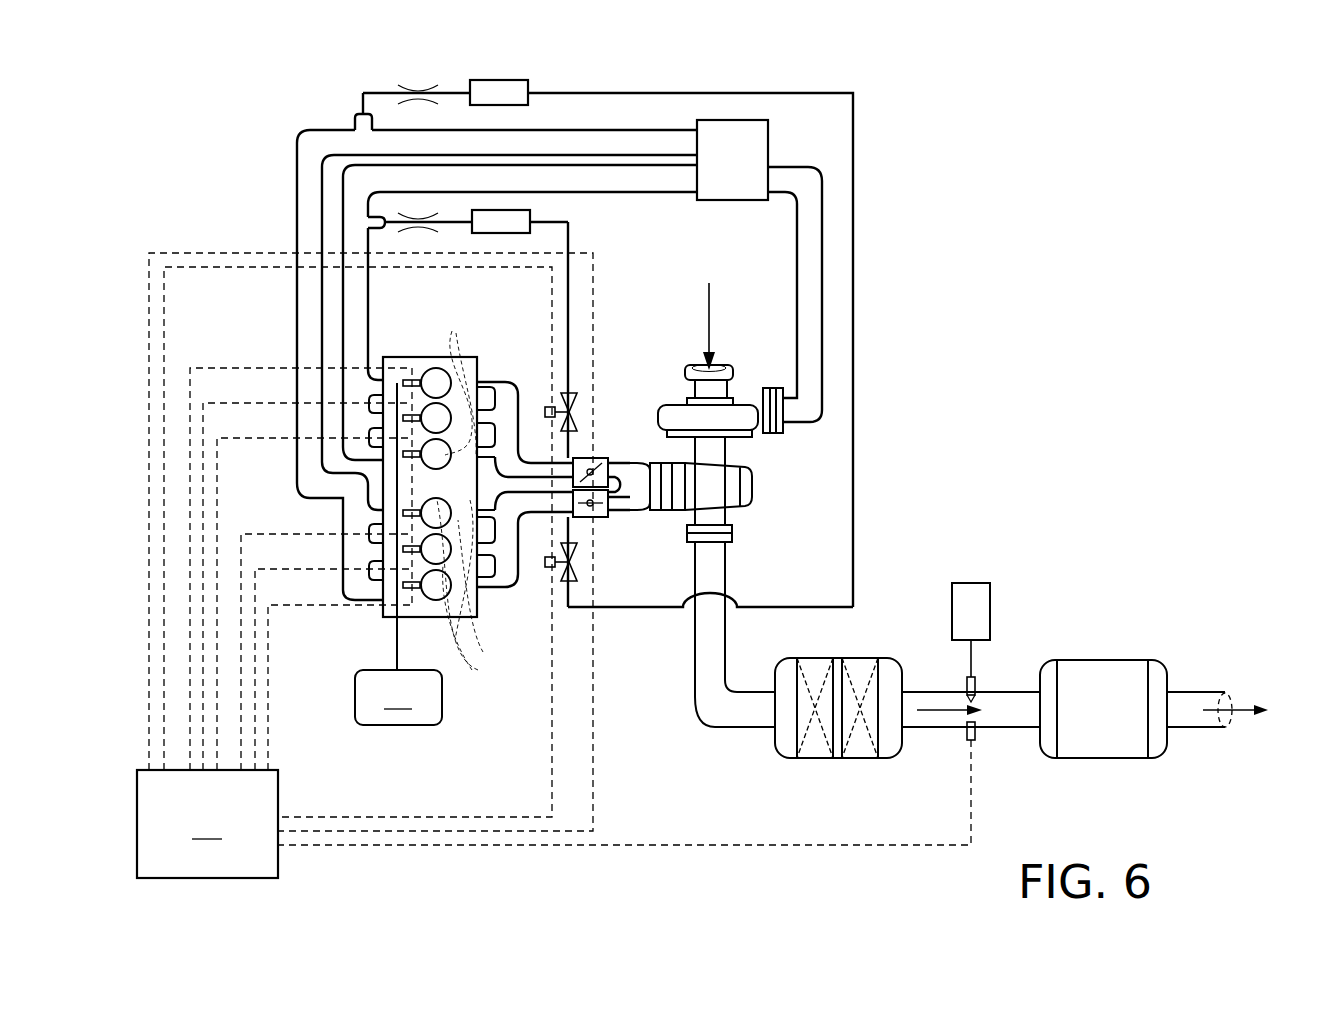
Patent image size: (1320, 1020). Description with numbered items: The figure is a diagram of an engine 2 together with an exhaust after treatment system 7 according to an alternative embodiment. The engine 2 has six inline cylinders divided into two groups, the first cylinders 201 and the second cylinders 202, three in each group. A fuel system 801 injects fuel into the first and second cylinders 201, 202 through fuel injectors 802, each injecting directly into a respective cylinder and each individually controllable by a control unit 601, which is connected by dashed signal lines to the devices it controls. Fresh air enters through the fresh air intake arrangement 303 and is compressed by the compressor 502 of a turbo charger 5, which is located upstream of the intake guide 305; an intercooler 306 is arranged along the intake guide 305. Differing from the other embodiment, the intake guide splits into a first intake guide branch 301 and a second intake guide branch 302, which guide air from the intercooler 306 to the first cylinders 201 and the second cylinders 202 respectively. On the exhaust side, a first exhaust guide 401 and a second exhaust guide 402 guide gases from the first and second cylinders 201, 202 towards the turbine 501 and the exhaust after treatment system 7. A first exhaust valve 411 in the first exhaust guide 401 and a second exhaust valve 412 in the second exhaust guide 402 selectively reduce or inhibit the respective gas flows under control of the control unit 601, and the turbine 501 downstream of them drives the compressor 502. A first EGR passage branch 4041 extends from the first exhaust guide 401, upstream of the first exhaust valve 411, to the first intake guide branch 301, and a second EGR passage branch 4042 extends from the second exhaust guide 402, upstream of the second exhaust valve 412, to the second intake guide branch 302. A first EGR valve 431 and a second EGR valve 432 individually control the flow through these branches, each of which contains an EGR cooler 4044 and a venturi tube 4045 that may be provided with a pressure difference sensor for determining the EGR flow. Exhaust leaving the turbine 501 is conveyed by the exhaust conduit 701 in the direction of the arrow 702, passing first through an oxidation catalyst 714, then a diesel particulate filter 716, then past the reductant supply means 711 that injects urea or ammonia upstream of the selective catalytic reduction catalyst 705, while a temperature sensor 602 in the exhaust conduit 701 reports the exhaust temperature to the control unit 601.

The engine 2 is at (628, 746).
The turbo charger 5 is at (752, 498).
The exhaust after treatment system 7 is at (1095, 528).
The first cylinders 201 is at (450, 332).
The second cylinders 202 is at (478, 668).
The first intake guide branch 301 is at (613, 192).
The second intake guide branch 302 is at (296, 205).
The fresh air intake arrangement 303 is at (718, 370).
The intake guide 305 is at (795, 226).
The intercooler 306 is at (768, 152).
The first exhaust guide 401 is at (538, 462).
The second exhaust guide 402 is at (538, 512).
The first exhaust valve 411 is at (606, 470).
The second exhaust valve 412 is at (612, 510).
The first EGR valve 431 is at (560, 400).
The second EGR valve 432 is at (560, 575).
The first EGR passage branch 4041 is at (590, 335).
The second EGR passage branch 4042 is at (628, 607).
The EGR cooler 4044 is at (495, 80).
The venturi tube 4045 is at (413, 83).
The turbine 501 is at (754, 478).
The compressor 502 is at (757, 433).
The control unit 601 is at (365, 565).
The temperature sensor 602 is at (976, 732).
The exhaust conduit 701 is at (922, 690).
The arrow 702 is at (930, 712).
The selective catalytic reduction catalyst 705 is at (1100, 660).
The reductant supply means 711 is at (970, 583).
The oxidation catalyst 714 is at (814, 758).
The diesel particulate filter 716 is at (870, 758).
The fuel system 801 is at (398, 697).
The fuel injectors 802 is at (482, 645).